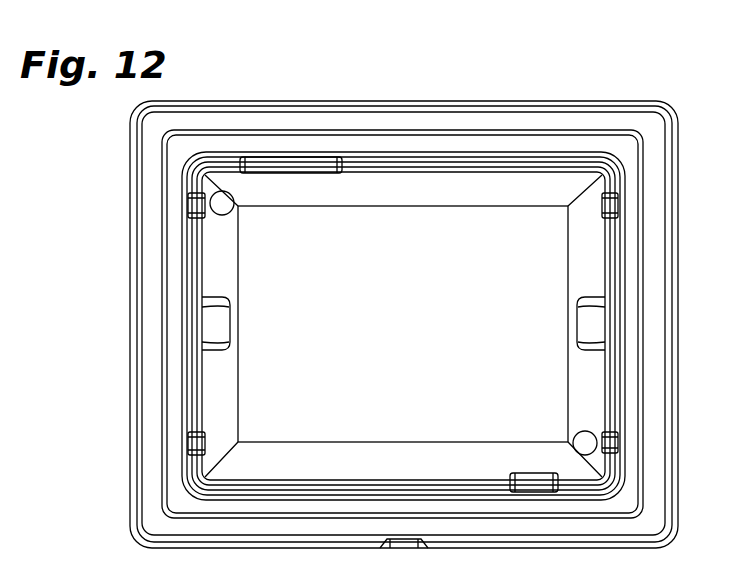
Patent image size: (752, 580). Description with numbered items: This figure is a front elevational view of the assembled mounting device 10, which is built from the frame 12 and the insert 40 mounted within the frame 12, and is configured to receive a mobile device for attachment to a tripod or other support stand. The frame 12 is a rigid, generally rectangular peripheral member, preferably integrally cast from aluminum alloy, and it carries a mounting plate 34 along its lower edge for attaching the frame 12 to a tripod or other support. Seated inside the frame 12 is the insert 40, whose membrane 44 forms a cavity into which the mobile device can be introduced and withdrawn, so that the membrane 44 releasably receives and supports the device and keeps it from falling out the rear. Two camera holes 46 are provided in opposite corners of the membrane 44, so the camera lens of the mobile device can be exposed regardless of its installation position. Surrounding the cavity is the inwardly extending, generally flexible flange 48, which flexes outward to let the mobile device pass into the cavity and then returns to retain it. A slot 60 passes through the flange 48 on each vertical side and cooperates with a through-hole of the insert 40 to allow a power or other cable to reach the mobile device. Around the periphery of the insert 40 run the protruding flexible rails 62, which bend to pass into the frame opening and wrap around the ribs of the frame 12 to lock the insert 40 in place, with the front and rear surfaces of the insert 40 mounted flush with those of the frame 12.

The mounting device 10 is at (617, 80).
The frame 12 is at (132, 253).
The mounting plate 34 is at (405, 549).
The insert 40 is at (463, 462).
The membrane 44 is at (389, 329).
The camera hole 46 is at (227, 207).
The flange 48 is at (327, 480).
The slot 60 is at (216, 320).
The rails 62 is at (650, 123).